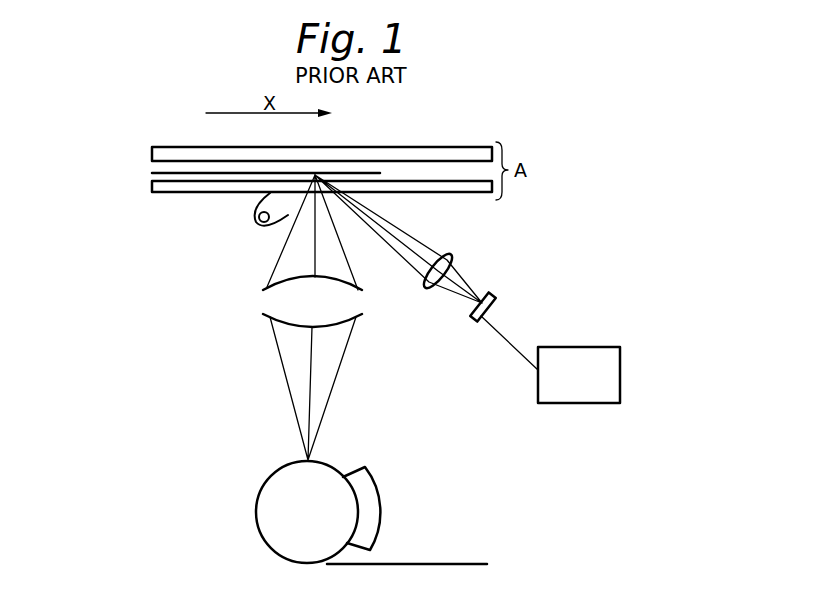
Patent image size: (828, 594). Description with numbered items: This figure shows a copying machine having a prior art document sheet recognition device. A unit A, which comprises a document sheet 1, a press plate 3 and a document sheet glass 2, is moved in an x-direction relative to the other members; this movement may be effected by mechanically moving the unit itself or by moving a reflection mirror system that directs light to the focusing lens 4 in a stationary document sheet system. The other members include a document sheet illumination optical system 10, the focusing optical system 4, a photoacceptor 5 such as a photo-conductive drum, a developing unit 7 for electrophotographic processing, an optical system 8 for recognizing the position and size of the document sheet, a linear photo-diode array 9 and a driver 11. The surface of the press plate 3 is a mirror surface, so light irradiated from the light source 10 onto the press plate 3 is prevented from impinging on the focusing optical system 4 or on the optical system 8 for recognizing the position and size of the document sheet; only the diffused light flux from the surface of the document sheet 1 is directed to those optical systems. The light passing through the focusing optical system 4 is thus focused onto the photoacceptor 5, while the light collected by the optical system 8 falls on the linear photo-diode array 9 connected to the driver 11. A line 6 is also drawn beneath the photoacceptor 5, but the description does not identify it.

The document sheet 1 is at (153, 172).
The document sheet glass 2 is at (152, 187).
The press plate 3 is at (153, 150).
The focusing optical system 4 is at (258, 304).
The photoacceptor 5 is at (273, 518).
The reference line 6 is at (433, 563).
The developing unit 7 is at (378, 490).
The optical system for recognizing position and size of the document sheet 8 is at (448, 256).
The linear photo-diode array 9 is at (495, 298).
The document sheet illumination optical system 10 is at (252, 222).
The driver 11 is at (620, 370).